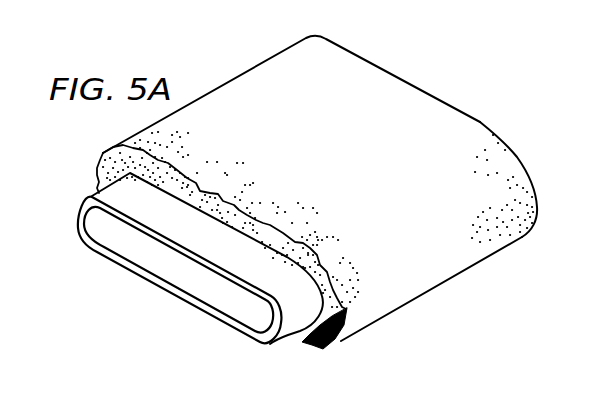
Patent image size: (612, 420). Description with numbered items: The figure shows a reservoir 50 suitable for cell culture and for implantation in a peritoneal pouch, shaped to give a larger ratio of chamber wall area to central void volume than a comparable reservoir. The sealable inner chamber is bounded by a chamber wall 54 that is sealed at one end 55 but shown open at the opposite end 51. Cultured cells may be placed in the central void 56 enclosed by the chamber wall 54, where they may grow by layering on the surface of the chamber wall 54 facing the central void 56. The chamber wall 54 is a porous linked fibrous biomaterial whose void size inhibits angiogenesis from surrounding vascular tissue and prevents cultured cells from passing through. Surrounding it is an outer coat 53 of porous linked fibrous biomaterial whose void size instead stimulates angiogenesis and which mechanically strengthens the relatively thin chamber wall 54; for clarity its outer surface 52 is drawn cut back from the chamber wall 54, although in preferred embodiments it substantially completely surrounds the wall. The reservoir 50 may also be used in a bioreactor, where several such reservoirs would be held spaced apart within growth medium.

The reservoir 50 is at (476, 70).
The open end 51 is at (200, 306).
The outer coating layer 52 is at (249, 69).
The outer coat 53 is at (320, 349).
The chamber wall 54 is at (98, 196).
The sealed end 55 is at (527, 161).
The central void 56 is at (88, 222).